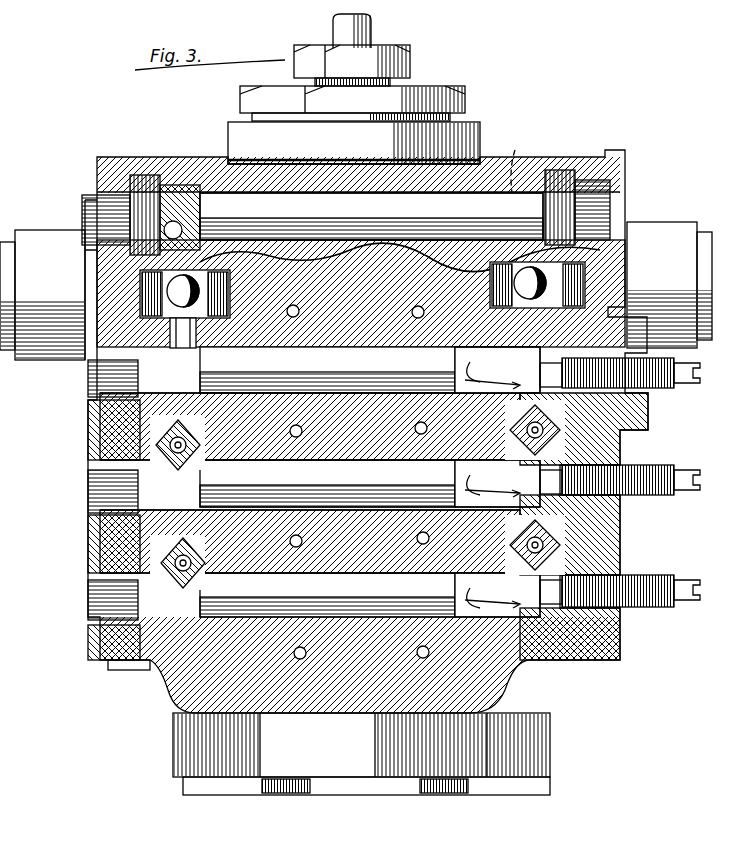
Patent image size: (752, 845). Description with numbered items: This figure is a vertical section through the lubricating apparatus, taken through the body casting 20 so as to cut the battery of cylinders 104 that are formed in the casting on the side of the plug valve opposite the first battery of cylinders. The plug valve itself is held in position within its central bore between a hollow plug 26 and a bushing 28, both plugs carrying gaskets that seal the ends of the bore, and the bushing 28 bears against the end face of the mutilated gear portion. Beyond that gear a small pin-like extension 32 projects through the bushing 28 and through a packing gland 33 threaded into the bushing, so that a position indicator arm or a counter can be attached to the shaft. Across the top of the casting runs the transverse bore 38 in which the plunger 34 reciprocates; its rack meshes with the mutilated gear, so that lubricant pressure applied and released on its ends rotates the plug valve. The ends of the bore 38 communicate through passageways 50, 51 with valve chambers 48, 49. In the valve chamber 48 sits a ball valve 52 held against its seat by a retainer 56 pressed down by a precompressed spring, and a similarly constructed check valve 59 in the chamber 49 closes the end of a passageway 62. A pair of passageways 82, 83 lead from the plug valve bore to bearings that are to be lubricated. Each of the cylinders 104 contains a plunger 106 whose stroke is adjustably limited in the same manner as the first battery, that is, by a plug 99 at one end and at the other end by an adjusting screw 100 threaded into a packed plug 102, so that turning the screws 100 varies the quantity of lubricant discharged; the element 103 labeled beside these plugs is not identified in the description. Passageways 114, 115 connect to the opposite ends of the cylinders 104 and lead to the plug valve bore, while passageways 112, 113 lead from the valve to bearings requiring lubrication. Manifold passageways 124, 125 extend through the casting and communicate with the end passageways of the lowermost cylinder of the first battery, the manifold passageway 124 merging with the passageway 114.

The body casting 20 is at (175, 730).
The hollow plug 26 is at (432, 787).
The bushing 28 is at (455, 95).
The pin-like extension 32 is at (372, 26).
The packing gland 33 is at (398, 62).
The plunger 34 is at (290, 200).
The transverse bore 38 is at (330, 200).
The valve chamber 48 is at (361, 293).
The valve chamber 49 is at (200, 290).
The passageway 50 is at (387, 184).
The passageway 51 is at (215, 168).
The ball valve 52 is at (400, 253).
The retainer 56 is at (495, 280).
The check valve 59 is at (187, 280).
The passageway 62 is at (197, 313).
The passageway 82 is at (418, 306).
The passageway 83 is at (293, 305).
The plug 99 is at (90, 410).
The adjusting screw 100 is at (665, 385).
The plug 102 is at (650, 398).
The check valve 103 is at (100, 436).
The cylinders 104 is at (325, 350).
The plunger 106 is at (370, 358).
The passageways 112 is at (438, 416).
The passageways 113 is at (310, 418).
The passageways 114 is at (492, 350).
The passageways 115 is at (215, 372).
The manifold passageway 124 is at (525, 395).
The manifold passageway 125 is at (190, 430).